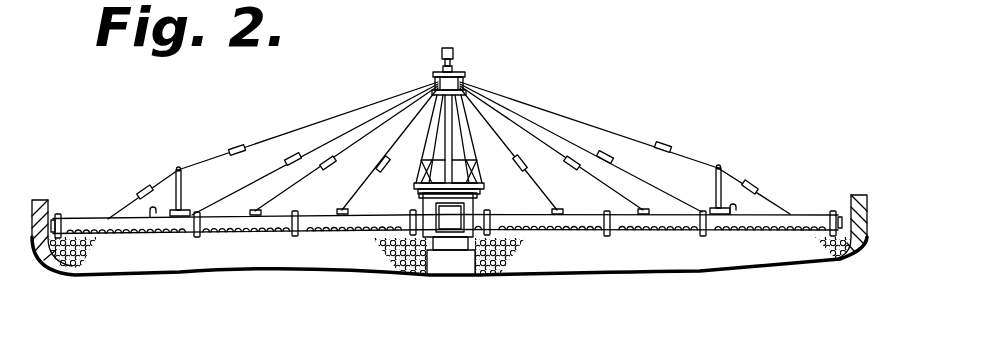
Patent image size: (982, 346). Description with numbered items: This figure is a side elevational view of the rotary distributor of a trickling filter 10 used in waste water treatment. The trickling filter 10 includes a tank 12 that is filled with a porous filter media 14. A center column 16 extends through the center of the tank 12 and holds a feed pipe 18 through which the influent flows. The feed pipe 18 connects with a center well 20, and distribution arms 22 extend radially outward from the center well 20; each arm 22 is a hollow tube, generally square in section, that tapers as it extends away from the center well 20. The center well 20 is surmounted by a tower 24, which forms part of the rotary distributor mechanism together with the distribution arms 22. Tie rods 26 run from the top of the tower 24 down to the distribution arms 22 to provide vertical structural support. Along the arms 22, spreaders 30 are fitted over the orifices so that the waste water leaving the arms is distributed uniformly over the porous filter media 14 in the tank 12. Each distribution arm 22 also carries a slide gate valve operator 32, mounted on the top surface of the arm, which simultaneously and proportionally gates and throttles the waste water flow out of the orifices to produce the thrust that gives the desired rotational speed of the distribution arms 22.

The trickling filter 10 is at (656, 116).
The tank 12 is at (46, 200).
The porous filter media 14 is at (830, 262).
The center column 16 is at (470, 270).
The feed pipe 18 is at (436, 269).
The center well 20 is at (483, 203).
The distribution arms 22 is at (141, 236).
The tower 24 is at (464, 80).
The tie rods 26 is at (561, 111).
The spreaders 30 is at (110, 237).
The slide gate valve operator 32 is at (187, 210).